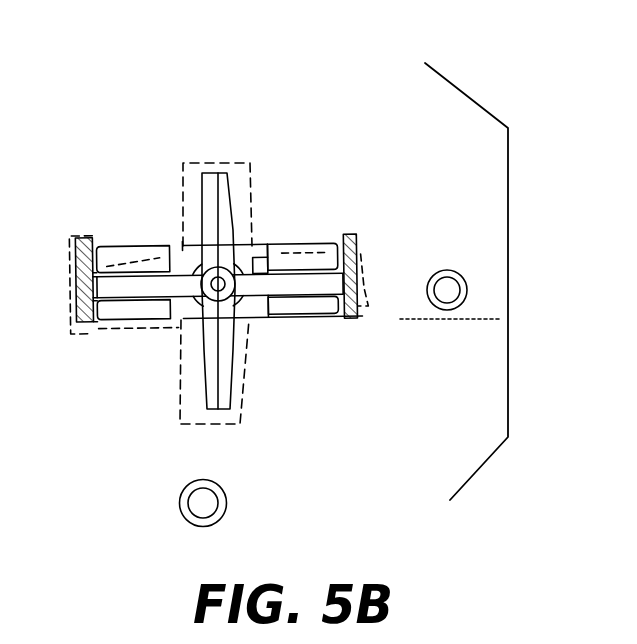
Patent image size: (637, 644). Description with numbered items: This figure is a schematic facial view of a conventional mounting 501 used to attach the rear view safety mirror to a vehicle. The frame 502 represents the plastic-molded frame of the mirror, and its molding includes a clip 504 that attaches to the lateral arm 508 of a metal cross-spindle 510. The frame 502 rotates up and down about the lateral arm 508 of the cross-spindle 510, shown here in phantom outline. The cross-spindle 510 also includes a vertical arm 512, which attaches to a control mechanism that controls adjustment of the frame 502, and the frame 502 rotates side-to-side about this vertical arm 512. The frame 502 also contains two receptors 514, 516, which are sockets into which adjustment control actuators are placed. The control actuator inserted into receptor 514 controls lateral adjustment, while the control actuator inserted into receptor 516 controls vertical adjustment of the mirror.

The conventional mounting 501 is at (256, 131).
The frame 502 is at (510, 247).
The clip 504 is at (268, 312).
The lateral arm 508 is at (265, 272).
The cross-spindle 510 is at (237, 409).
The vertical arm 512 is at (230, 202).
The receptor 514 is at (447, 310).
The receptor 516 is at (238, 502).